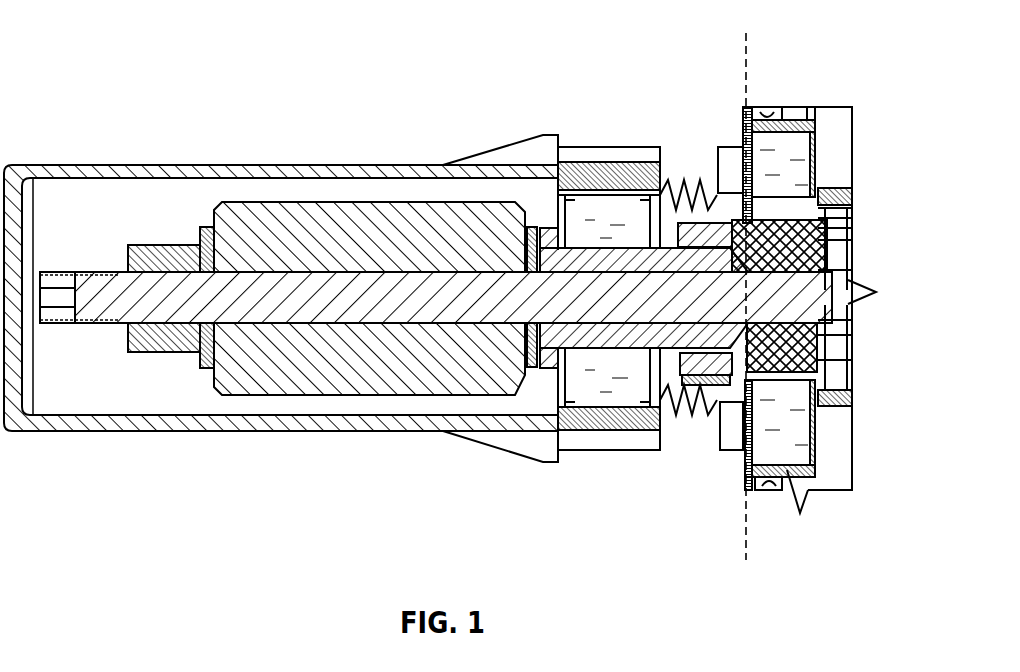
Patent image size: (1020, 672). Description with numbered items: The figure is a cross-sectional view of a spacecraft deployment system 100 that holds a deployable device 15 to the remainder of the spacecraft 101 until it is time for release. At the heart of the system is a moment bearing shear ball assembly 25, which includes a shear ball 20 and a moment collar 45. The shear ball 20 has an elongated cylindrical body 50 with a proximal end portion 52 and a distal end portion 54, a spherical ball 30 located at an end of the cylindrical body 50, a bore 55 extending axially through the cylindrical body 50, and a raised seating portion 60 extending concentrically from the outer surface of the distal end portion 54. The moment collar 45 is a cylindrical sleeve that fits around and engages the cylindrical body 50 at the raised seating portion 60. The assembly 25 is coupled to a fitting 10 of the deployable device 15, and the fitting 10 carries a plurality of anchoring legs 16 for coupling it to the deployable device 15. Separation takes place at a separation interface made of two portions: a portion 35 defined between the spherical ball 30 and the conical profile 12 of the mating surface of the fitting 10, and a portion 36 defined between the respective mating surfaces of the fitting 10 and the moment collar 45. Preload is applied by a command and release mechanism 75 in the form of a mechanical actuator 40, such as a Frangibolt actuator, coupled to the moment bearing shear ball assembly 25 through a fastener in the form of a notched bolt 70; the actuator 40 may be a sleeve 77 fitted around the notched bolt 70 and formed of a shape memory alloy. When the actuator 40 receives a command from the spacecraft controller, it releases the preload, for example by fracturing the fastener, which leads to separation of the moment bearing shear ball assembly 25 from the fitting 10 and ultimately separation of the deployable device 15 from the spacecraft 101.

The spacecraft deployment system 100 is at (568, 50).
The spacecraft 101 is at (42, 163).
The mechanical actuator 40 is at (326, 305).
The notched bolt 70 is at (277, 263).
The command and release mechanism 75 is at (266, 402).
The sleeve 77 is at (360, 375).
The cylindrical body 50 is at (553, 250).
The proximal end portion 52 is at (550, 358).
The bore 55 is at (613, 324).
The shear ball 20 is at (609, 263).
The raised seating portion 60 is at (630, 238).
The moment collar 45 is at (727, 162).
The distal end portion 54 is at (733, 393).
The conical profile 12 is at (760, 270).
The fitting 10 is at (839, 283).
The deployable device 15 is at (801, 176).
The portion of separation interface 36 is at (767, 108).
The moment bearing shear ball assembly 25 is at (820, 190).
The spherical ball 30 is at (752, 228).
The portion of separation interface 35 is at (797, 402).
The anchoring legs 16 is at (790, 415).